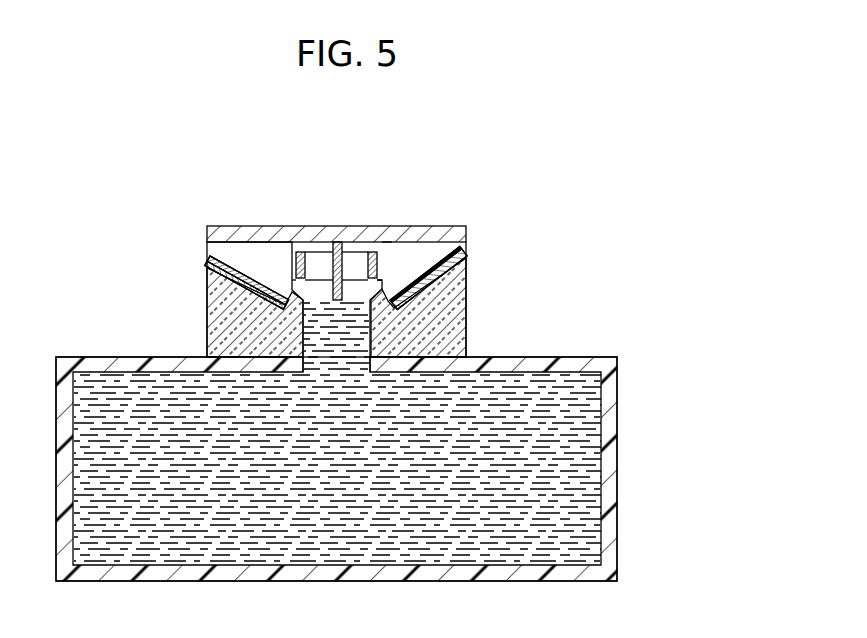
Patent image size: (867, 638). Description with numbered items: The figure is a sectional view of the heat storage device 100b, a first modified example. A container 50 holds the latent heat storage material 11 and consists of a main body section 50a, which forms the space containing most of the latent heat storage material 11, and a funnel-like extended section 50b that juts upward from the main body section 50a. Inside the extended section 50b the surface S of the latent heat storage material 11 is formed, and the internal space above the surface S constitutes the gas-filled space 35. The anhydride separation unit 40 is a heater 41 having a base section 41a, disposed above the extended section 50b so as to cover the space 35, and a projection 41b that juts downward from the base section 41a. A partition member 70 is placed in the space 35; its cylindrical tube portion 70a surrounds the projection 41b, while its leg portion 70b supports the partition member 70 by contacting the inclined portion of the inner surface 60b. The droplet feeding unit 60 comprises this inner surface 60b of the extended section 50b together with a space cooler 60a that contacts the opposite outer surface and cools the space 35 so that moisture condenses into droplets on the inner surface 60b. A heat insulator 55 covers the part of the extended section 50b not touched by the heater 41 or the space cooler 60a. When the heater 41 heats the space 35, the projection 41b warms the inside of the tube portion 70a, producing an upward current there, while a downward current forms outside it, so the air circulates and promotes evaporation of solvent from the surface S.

The latent heat storage material 11 is at (560, 470).
The space 35 is at (425, 252).
The anhydride separation unit 40 is at (303, 142).
The heater 41 is at (348, 124).
The base section 41a is at (334, 262).
The projection 41b is at (352, 305).
The container 50 is at (713, 322).
The main body section 50a is at (608, 372).
The extended section 50b is at (385, 337).
The heat insulator 55 is at (228, 336).
The droplet feeding unit 60 is at (107, 185).
The space cooler 60a is at (228, 277).
The inner surface 60b is at (289, 282).
The partition member 70 is at (193, 142).
The tube portion 70a is at (292, 276).
The leg portion 70b is at (262, 230).
The heat storage device 100b is at (432, 117).
The surface S is at (391, 252).